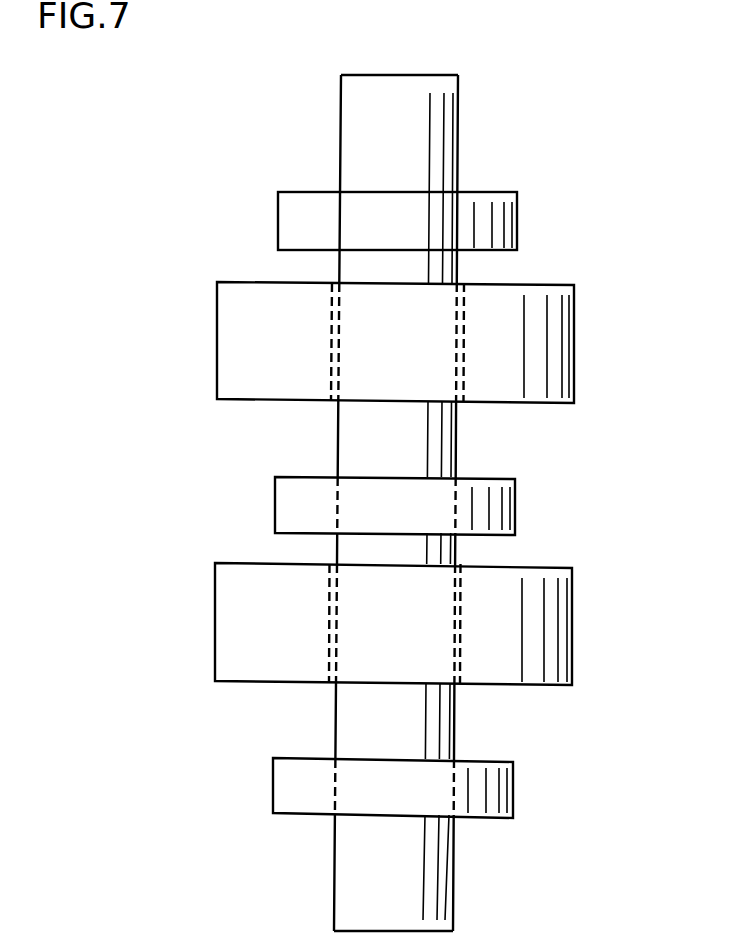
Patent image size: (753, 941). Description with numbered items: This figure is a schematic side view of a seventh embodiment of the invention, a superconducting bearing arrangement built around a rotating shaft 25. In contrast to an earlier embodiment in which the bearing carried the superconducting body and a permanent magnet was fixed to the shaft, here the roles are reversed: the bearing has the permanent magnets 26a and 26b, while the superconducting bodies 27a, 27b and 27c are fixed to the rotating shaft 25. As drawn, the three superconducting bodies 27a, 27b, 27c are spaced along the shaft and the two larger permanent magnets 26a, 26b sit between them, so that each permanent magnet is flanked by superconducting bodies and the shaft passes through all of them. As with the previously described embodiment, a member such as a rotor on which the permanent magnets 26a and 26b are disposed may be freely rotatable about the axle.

The rotating shaft 25 is at (442, 148).
The superconducting body 27a is at (498, 227).
The permanent magnet 26a is at (555, 392).
The superconducting body 27b is at (500, 513).
The permanent magnet 26b is at (553, 673).
The superconducting body 27c is at (478, 812).